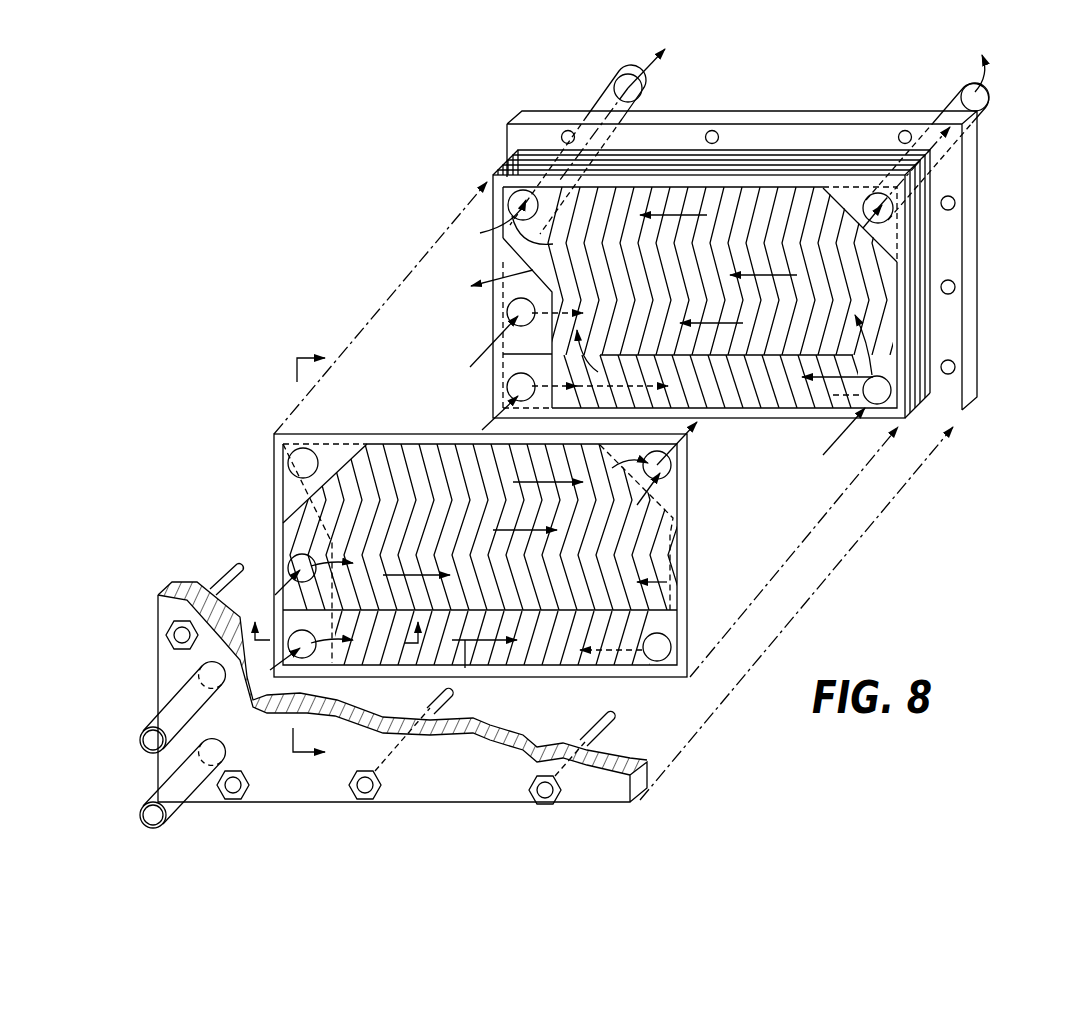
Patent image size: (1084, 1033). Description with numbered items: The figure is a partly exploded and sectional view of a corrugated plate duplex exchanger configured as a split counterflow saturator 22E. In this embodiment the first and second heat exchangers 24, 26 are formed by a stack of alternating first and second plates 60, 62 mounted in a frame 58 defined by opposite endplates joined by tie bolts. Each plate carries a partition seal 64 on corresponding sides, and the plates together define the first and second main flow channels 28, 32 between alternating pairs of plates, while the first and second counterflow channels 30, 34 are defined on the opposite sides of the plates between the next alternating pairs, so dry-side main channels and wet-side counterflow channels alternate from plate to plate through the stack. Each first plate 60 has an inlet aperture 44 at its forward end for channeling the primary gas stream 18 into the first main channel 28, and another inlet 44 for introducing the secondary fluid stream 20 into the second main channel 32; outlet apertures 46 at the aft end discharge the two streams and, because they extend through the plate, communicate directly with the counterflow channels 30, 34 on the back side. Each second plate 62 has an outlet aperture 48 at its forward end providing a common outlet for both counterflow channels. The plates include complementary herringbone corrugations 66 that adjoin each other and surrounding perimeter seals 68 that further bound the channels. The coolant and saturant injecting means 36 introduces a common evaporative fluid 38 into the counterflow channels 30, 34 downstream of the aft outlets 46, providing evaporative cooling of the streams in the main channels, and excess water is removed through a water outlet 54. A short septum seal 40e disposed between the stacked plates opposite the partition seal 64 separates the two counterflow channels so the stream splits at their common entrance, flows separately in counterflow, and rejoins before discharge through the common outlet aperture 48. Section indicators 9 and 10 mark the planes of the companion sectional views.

The split counterflow saturator 22E is at (437, 203).
The frame 58 is at (457, 787).
The first plates 60 is at (928, 410).
The perimeter seals 68 is at (842, 183).
The herringbone corrugations 66 is at (768, 200).
The second counterflow channel 34 is at (649, 280).
The first counterflow channel 30 is at (744, 392).
The septum seal 40e is at (665, 353).
The outlet aperture 48 is at (505, 217).
The second plates 62 is at (491, 325).
The partition seal 64 is at (510, 365).
The outlet aperture 46 is at (885, 218).
The inlet aperture 44 is at (290, 560).
The water outlet 54 is at (441, 302).
The coolant and saturant injecting means 36 is at (799, 479).
The evaporative fluid 38 is at (497, 278).
The first heat exchanger 24 is at (520, 674).
The second heat exchanger 26 is at (663, 538).
The second main flow channel 32 is at (434, 530).
The first main flow channel 28 is at (537, 650).
The primary gas stream 18 is at (640, 70).
The secondary fluid stream 20 is at (985, 72).
The section line 9 is at (310, 558).
The section line 10 is at (344, 617).